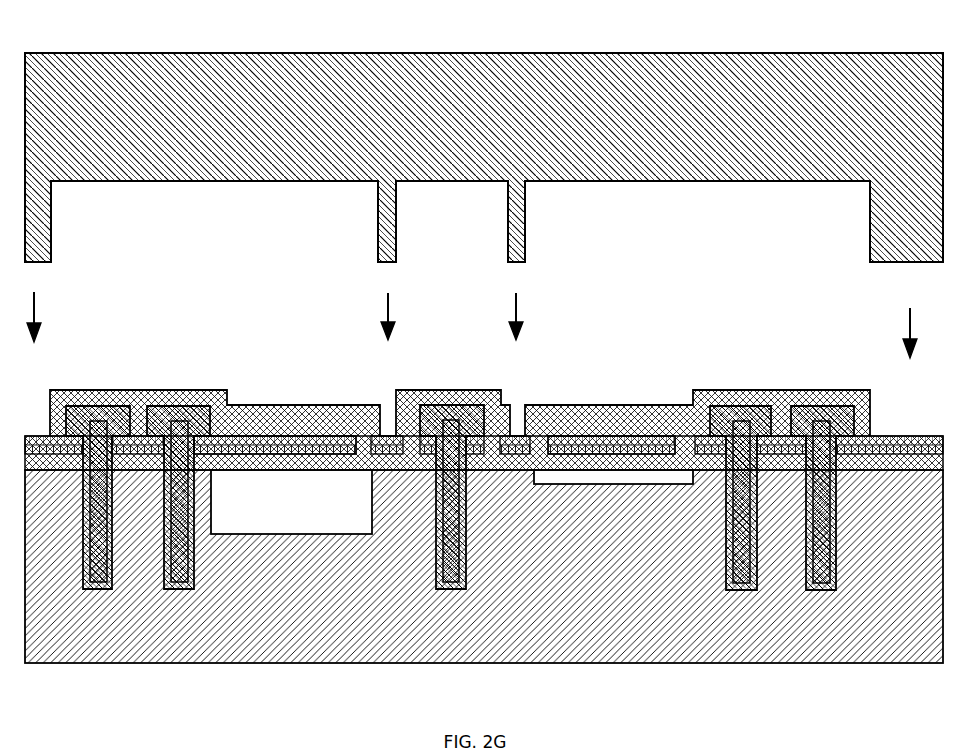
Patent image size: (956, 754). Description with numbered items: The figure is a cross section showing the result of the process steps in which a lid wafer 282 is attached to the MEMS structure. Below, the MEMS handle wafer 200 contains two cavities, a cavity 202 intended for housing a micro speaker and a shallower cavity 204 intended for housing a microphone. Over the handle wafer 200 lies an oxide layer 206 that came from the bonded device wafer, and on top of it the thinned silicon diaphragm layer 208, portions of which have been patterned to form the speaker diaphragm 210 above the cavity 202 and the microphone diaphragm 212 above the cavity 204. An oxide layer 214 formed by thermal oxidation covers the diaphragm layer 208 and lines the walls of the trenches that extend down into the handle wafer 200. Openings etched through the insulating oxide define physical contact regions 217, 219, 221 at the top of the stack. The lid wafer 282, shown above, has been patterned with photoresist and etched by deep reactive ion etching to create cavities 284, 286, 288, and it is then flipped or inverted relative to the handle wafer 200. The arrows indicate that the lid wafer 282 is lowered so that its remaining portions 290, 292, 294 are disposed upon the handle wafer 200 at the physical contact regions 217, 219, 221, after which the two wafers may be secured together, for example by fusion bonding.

The MEMS handle wafer 200 is at (484, 566).
The cavity 202 is at (291, 502).
The cavity 204 is at (613, 476).
The oxide layer 206 is at (484, 453).
The diaphragm layer 208 is at (484, 445).
The speaker diaphragm 210 is at (275, 445).
The microphone diaphragm 212 is at (611, 445).
The oxide layer 214 is at (460, 412).
The physical contact region 217 is at (378, 393).
The physical contact region 219 is at (505, 393).
The physical contact region 221 is at (893, 393).
The lid wafer 282 is at (484, 157).
The cavity 284 is at (219, 231).
The cavity 286 is at (451, 227).
The cavity 288 is at (698, 231).
The portion of lid wafer 290 is at (370, 244).
The portion of lid wafer 292 is at (500, 244).
The portion of lid wafer 294 is at (862, 243).